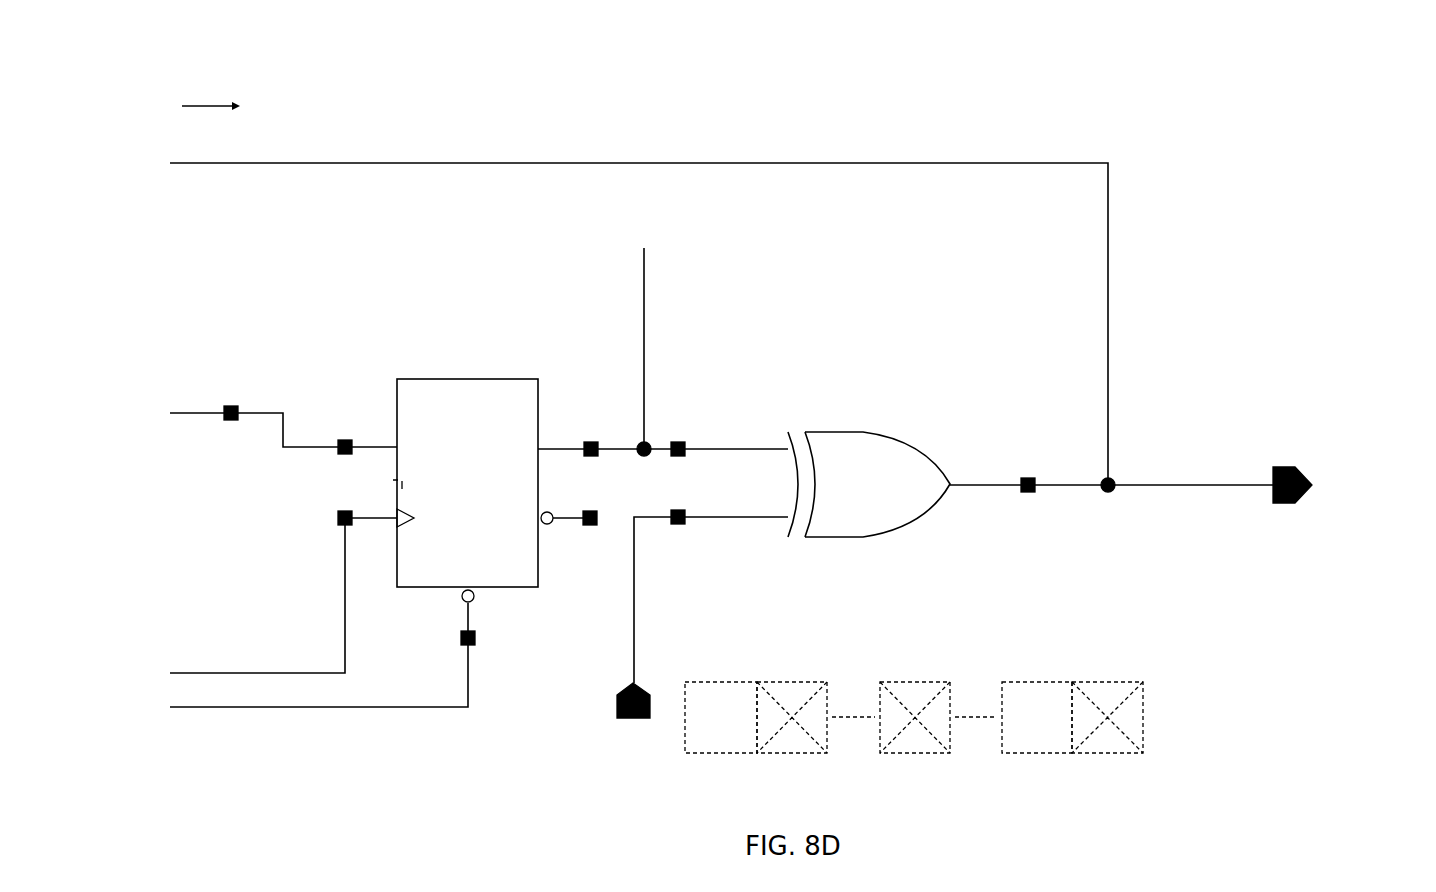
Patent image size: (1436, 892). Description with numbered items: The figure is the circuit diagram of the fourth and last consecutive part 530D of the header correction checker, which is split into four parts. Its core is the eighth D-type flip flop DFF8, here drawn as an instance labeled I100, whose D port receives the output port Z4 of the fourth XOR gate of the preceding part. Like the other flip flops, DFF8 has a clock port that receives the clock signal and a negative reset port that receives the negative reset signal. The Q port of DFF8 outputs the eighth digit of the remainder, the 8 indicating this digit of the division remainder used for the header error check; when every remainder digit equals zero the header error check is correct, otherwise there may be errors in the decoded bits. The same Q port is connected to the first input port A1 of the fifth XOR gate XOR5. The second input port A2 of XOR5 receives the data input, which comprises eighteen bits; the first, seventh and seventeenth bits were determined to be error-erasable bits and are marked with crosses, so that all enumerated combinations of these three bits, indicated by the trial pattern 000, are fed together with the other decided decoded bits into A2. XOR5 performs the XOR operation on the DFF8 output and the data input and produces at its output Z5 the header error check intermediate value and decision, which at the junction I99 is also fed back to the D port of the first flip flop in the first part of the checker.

The partial view of header correction checker 530D is at (1240, 86).
The flip-flop instance I100 is at (392, 461).
The eighth D-type flip flop DFF8 is at (473, 483).
The fifth XOR gate XOR5 is at (869, 492).
The output net junction I99 is at (1072, 447).
The output port of the fourth XOR gate Z4 is at (283, 420).
The XOR output net Z5 is at (1167, 479).
The first input port A1 is at (663, 440).
The second input port A2 is at (702, 654).
The data input D 8 is at (633, 348).
The data bit array 000 is at (1143, 682).